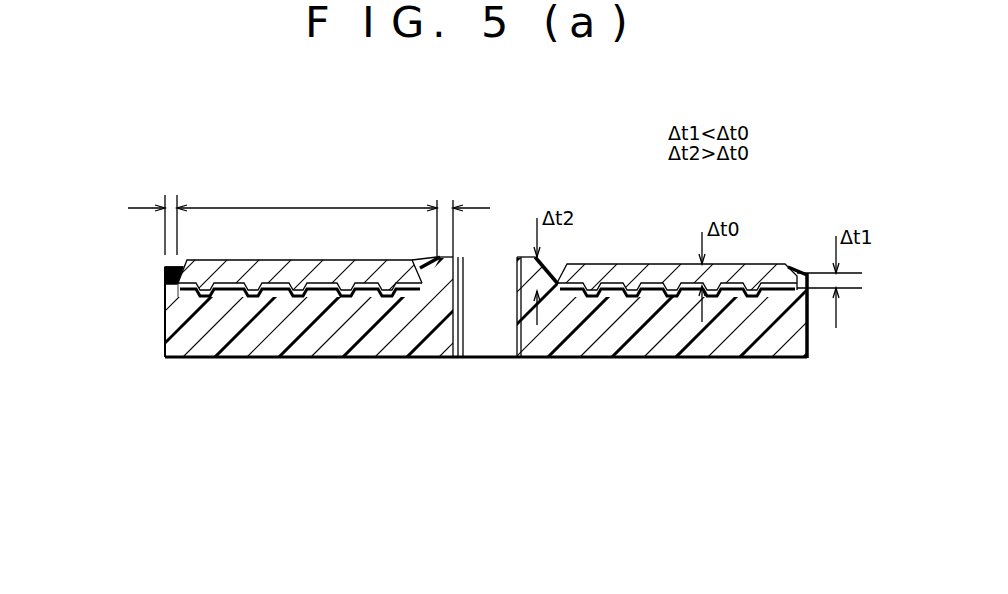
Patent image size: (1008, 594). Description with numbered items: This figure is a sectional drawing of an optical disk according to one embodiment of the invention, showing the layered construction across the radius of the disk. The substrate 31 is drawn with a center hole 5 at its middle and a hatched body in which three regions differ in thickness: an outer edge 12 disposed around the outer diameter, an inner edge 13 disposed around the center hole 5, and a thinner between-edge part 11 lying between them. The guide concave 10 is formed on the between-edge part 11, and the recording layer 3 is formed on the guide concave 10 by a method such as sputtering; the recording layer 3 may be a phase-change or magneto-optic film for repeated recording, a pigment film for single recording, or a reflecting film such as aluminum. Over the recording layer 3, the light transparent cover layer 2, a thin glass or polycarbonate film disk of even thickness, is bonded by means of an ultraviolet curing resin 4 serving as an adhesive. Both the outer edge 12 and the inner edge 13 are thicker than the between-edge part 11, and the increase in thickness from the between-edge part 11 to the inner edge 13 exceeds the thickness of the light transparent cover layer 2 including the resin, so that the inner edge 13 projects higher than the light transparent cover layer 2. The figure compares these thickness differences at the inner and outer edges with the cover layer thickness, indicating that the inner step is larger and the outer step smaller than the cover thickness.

The outer edge 12 is at (171, 205).
The between-edge part 11 is at (310, 207).
The inner edge 13 is at (445, 207).
The substrate 31 is at (186, 338).
The light transparent cover layer 2 is at (233, 285).
The guide concave 10 is at (247, 290).
The recording layer 3 is at (297, 298).
The center hole 5 is at (455, 323).
The ultraviolet curing resin 4 is at (792, 282).